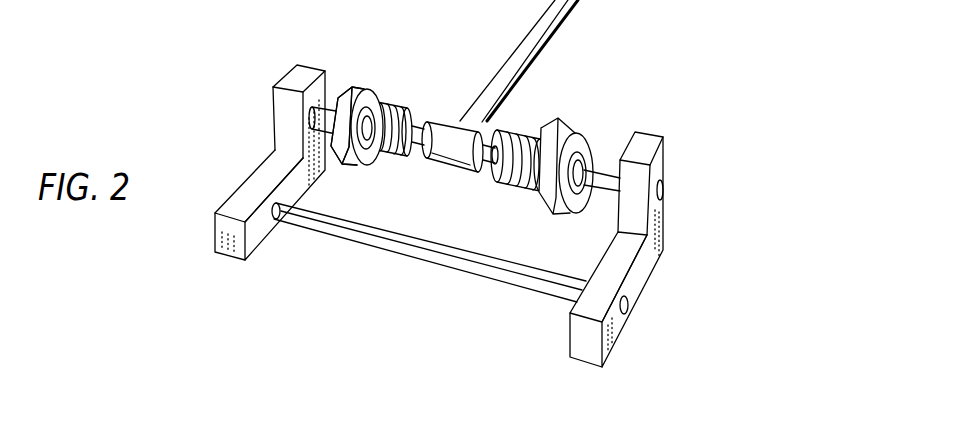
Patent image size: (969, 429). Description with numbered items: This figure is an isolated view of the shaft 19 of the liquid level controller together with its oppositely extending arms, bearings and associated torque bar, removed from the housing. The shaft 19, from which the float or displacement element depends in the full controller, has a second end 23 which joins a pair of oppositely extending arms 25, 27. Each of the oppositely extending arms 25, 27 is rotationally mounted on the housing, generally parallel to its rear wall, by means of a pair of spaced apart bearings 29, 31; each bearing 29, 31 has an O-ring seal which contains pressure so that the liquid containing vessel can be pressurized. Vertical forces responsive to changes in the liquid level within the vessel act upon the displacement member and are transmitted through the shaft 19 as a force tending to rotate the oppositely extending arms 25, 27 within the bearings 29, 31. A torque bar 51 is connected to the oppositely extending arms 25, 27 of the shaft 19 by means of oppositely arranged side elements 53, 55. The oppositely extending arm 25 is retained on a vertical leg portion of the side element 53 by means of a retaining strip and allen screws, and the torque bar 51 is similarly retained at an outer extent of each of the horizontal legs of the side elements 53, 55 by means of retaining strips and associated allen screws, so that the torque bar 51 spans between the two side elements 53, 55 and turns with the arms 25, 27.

The shaft 19 is at (557, 13).
The second end 23 is at (488, 118).
The oppositely extending arm 25 is at (600, 153).
The oppositely extending arm 27 is at (420, 120).
The bearing 29 is at (565, 126).
The bearing 31 is at (368, 90).
The torque bar 51 is at (388, 238).
The side element 53 is at (618, 258).
The side element 55 is at (270, 178).